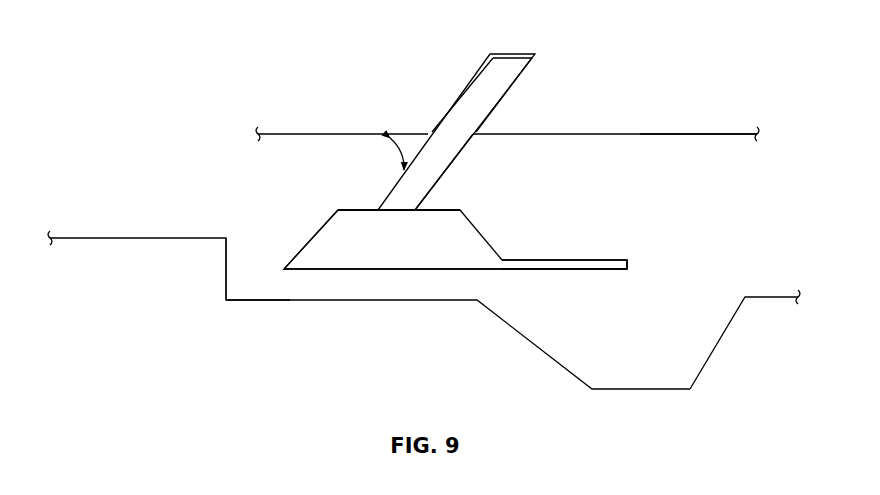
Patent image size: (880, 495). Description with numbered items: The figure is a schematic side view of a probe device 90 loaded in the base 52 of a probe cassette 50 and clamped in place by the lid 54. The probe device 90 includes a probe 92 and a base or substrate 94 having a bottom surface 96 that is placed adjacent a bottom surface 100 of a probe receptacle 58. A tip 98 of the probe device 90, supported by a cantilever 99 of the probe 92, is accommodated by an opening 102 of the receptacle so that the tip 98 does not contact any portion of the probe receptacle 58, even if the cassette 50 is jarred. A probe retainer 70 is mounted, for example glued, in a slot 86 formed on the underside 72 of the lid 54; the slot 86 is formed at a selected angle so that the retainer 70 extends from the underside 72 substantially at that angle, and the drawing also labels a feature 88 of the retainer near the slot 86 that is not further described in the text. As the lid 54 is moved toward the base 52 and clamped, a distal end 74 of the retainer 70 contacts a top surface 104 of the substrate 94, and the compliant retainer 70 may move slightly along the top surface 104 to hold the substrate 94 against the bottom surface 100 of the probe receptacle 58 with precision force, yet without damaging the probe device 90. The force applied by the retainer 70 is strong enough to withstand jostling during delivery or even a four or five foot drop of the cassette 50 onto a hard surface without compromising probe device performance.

The cassette 50 is at (230, 191).
The base 52 is at (90, 238).
The lid 54 is at (622, 134).
The probe receptacle 58 is at (285, 302).
The probe retainer 70 is at (463, 145).
The underside 72 is at (655, 134).
The distal end 74 is at (378, 210).
The slot 86 is at (537, 42).
The blade edge 88 is at (505, 53).
The probe device 90 is at (292, 242).
The probe 92 is at (590, 239).
The substrate 94 is at (342, 230).
The bottom surface 96 is at (520, 269).
The tip 98 is at (622, 273).
The cantilever 99 is at (627, 263).
The bottom surface 100 is at (265, 300).
The opening 102 is at (697, 341).
The top surface 104 is at (442, 208).